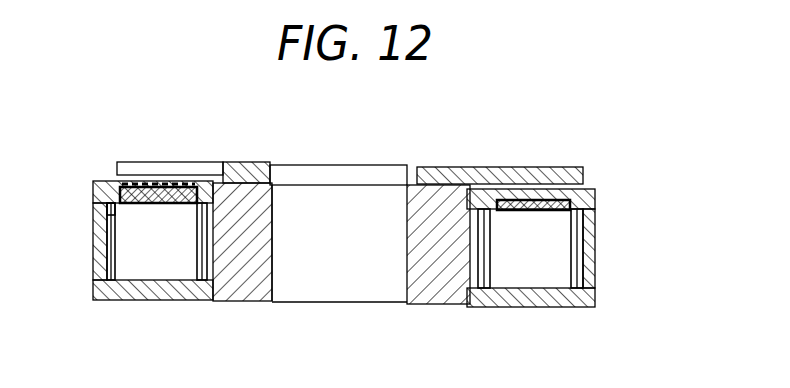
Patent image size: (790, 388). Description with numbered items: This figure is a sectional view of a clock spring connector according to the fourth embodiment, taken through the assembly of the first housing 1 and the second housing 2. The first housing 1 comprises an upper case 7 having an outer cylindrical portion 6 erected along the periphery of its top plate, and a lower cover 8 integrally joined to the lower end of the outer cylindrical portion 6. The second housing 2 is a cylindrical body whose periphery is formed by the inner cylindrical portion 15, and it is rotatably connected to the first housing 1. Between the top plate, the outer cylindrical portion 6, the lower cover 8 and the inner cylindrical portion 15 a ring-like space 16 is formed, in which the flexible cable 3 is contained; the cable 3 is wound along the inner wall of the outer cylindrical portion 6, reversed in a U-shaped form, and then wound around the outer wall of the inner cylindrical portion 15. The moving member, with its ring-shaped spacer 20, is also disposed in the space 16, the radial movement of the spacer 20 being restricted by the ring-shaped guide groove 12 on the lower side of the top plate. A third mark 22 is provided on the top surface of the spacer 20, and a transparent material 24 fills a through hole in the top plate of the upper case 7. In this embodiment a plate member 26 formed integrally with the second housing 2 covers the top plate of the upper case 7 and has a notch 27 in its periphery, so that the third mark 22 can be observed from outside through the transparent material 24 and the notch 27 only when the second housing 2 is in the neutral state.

The first housing 1 is at (574, 247).
The second housing 2 is at (237, 288).
The flexible cable 3 is at (196, 258).
The outer cylindrical portion 6 is at (93, 250).
The upper case 7 is at (603, 238).
The lower cover 8 is at (558, 301).
The guide groove 12 is at (600, 198).
The inner cylindrical portion 15 is at (407, 264).
The space 16 is at (140, 270).
The spacer 20 is at (524, 198).
The third mark 22 is at (174, 185).
The transparent material 24 is at (146, 200).
The plate member 26 is at (435, 170).
The notch 27 is at (212, 165).